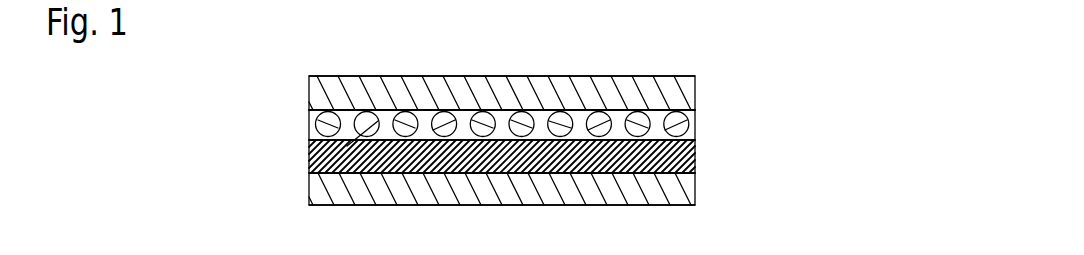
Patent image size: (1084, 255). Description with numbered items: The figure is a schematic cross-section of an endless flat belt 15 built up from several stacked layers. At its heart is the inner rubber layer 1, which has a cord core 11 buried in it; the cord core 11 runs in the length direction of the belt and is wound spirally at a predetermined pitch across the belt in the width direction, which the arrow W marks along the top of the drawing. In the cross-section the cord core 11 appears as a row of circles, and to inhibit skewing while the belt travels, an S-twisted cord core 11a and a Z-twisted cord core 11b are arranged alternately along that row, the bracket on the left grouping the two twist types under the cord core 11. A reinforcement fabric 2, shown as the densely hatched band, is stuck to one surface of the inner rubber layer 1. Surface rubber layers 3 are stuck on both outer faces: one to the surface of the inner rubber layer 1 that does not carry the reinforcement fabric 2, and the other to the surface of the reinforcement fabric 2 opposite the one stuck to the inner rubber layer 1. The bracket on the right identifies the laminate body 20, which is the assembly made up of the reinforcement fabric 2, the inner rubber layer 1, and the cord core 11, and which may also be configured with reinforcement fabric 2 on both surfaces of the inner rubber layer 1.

The endless flat belt 15 is at (293, 83).
The laminate body 20 is at (792, 120).
The surface rubber layer 3 is at (696, 93).
The inner rubber layer 1 is at (696, 133).
The reinforcement fabric 2 is at (696, 163).
The cord core 11 is at (199, 100).
The S-twisted cord core 11a is at (308, 115).
The Z-twisted cord core 11b is at (308, 140).
The width direction W is at (547, 64).